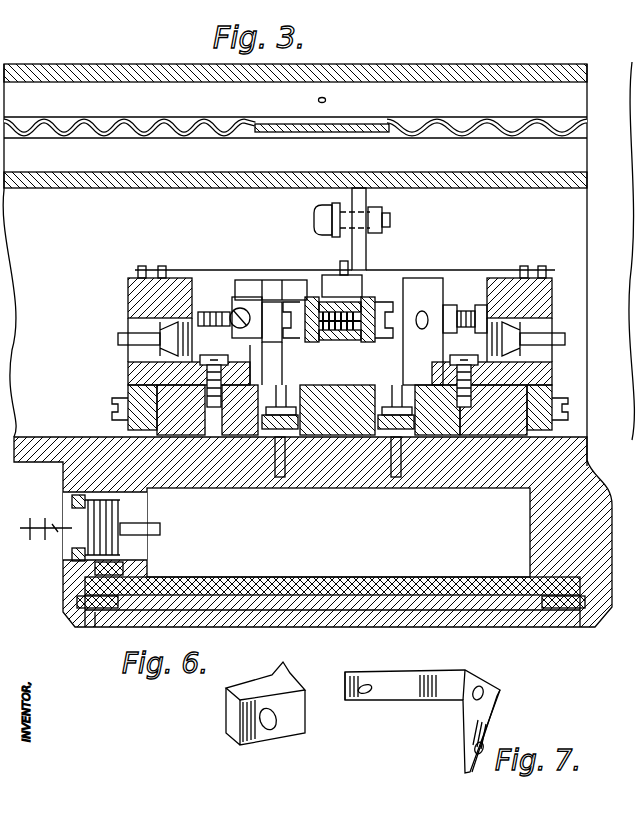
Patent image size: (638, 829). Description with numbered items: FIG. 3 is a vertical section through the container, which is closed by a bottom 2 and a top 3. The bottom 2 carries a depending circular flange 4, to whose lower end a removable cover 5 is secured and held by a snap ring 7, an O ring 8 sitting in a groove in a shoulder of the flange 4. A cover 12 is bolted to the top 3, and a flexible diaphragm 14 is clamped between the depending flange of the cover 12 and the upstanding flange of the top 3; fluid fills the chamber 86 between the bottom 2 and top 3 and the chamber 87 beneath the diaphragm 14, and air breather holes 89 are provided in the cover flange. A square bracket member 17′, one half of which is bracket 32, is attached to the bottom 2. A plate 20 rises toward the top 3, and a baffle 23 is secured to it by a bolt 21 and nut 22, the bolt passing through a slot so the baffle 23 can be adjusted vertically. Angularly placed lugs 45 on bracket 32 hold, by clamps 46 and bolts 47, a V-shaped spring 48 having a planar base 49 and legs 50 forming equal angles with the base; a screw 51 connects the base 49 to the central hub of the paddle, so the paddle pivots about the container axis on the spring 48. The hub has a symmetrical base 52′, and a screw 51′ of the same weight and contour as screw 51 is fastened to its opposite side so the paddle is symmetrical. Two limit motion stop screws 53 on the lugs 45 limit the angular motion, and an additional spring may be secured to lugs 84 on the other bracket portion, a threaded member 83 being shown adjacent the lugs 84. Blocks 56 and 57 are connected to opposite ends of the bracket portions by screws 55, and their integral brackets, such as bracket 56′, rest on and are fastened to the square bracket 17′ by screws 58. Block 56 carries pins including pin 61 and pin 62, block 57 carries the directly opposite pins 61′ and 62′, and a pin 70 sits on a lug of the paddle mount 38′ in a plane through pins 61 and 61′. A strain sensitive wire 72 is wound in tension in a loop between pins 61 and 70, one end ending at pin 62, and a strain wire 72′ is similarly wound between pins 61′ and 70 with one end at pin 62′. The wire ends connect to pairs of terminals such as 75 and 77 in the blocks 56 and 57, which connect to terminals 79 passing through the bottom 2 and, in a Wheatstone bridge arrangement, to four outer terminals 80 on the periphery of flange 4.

In FIG. 3, the bottom 2 is at (41, 437).
In FIG. 3, the top 3 is at (90, 188).
In FIG. 3, the depending circular flange 4 is at (530, 513).
In FIG. 3, the removable cover 5 is at (290, 578).
In FIG. 3, the snap ring 7 is at (100, 628).
In FIG. 3, the O ring 8 is at (124, 567).
In FIG. 3, the cover 12 is at (491, 70).
In FIG. 3, the flexible diaphragm 14 is at (266, 126).
In FIG. 3, the square bracket member 17′ is at (126, 375).
In FIG. 3, the upwardly extending plate 20 is at (367, 243).
In FIG. 3, the bolt 21 is at (313, 218).
In FIG. 3, the nut 22 is at (392, 213).
In FIG. 3, the baffle 23 is at (352, 247).
In FIG. 3, the half bracket portion 32 is at (160, 392).
In FIG. 3, the paddle mount 38′ is at (362, 287).
In FIG. 3, the angularly placed lugs 45 is at (270, 280).
In FIG. 3, the clamp 46 is at (245, 284).
In FIG. 6, the clamp 46 is at (282, 735).
In FIG. 3, the bolt 47 is at (252, 336).
In FIG. 3, the V-shaped spring 48 is at (282, 340).
In FIG. 7, the V-shaped spring 48 is at (431, 707).
In FIG. 7, the planar base 49 is at (472, 702).
In FIG. 7, the legs 50 is at (396, 678).
In FIG. 3, the screw 51 is at (289, 304).
In FIG. 3, the screw 51′ is at (395, 308).
In FIG. 3, the symmetrical base 52′ is at (318, 342).
In FIG. 3, the limit motion stop screw 53 is at (210, 312).
In FIG. 3, the screw 55 is at (112, 410).
In FIG. 3, the block 56 is at (552, 280).
In FIG. 3, the longitudinally extending bracket 56′ is at (419, 353).
In FIG. 3, the block 57 is at (128, 292).
In FIG. 3, the screw 58 is at (468, 349).
In FIG. 3, the pin 61 is at (542, 266).
In FIG. 3, the pin 61′ is at (142, 266).
In FIG. 3, the pin 62 is at (524, 266).
In FIG. 3, the pin 62′ is at (162, 266).
In FIG. 3, the pin 70 is at (340, 265).
In FIG. 3, the strain sensitive wire 72 is at (489, 270).
In FIG. 3, the strain wire 72′ is at (203, 270).
In FIG. 3, the terminals 75 is at (560, 338).
In FIG. 3, the terminals 77 is at (117, 336).
In FIG. 3, the terminals 79 is at (292, 386).
In FIG. 3, the outer terminals 80 is at (162, 530).
In FIG. 3, the threaded sleeve 83 is at (462, 306).
In FIG. 3, the lugs 84 is at (423, 277).
In FIG. 3, the chamber 86 is at (72, 249).
In FIG. 3, the chamber 87 is at (346, 148).
In FIG. 3, the air breather holes 89 is at (326, 100).